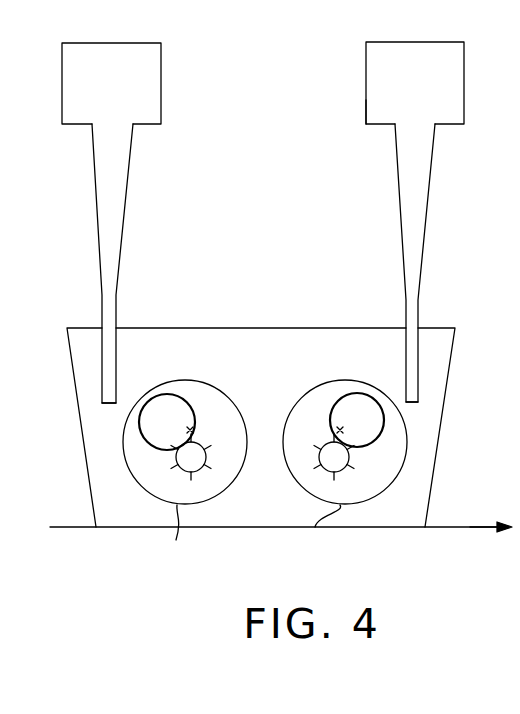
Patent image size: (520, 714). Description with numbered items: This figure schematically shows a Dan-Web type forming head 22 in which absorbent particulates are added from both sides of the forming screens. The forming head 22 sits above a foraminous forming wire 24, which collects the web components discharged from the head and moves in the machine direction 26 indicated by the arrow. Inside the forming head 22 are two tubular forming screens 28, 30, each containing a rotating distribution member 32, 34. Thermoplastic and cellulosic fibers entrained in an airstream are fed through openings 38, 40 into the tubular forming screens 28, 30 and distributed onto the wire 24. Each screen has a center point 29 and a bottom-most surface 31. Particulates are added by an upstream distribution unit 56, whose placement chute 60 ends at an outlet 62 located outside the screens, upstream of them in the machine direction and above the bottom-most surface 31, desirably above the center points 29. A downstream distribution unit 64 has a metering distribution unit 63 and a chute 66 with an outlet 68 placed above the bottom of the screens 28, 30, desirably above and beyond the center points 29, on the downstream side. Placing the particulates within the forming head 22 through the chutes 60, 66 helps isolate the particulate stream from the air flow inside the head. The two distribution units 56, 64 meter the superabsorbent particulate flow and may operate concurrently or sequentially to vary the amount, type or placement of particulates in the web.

The forming head 22 is at (448, 376).
The foraminous forming wire 24 is at (360, 527).
The machine direction 26 is at (485, 527).
The tubular forming screen 28 is at (358, 382).
The center points 29 is at (337, 431).
The tubular forming screen 30 is at (220, 390).
The bottom-most surface 31 is at (253, 537).
The rotating distribution member 32 is at (195, 463).
The rotating distribution member 34 is at (337, 457).
The opening 38 is at (167, 405).
The opening 40 is at (348, 405).
The upstream distribution unit 56 is at (162, 78).
The placement chute 60 is at (116, 293).
The outlet 62 is at (108, 404).
The metering distribution unit 63 is at (377, 82).
The downstream distribution unit 64 is at (365, 108).
The chute 66 is at (406, 310).
The outlet 68 is at (413, 403).